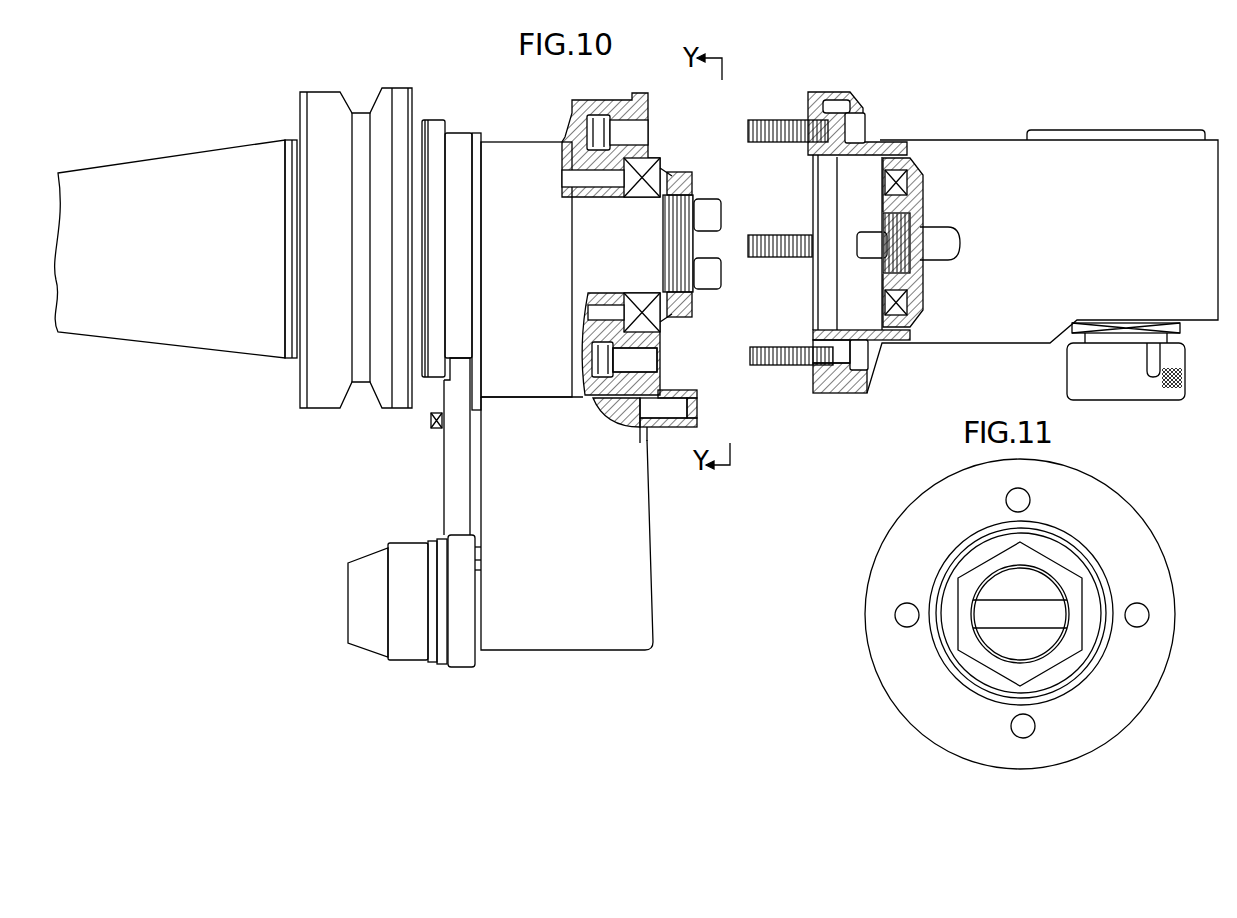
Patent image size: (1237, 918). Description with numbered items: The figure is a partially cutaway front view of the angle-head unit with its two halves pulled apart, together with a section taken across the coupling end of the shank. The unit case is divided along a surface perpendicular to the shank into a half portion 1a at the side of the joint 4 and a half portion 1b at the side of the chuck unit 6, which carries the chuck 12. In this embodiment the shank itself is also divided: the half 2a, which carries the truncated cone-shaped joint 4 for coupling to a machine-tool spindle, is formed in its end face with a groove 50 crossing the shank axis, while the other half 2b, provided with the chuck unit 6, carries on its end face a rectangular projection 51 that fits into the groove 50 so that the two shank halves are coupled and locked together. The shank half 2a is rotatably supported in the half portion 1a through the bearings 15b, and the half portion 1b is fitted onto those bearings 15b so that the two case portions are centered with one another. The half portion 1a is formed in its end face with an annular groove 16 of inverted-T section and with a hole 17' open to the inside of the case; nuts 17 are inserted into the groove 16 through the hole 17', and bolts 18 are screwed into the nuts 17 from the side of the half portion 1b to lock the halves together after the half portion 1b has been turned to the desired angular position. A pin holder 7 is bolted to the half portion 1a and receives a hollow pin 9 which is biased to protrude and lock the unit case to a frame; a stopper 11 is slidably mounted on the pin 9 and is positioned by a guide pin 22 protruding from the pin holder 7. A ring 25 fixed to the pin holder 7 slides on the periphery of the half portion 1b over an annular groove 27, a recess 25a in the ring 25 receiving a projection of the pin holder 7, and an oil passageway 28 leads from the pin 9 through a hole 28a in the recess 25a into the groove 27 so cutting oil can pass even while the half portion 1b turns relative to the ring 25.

In FIG. 10, the joint 4 is at (208, 168).
In FIG. 10, the half portion 1a is at (520, 165).
In FIG. 11, the half portion 1a is at (920, 525).
In FIG. 10, the half portion 1b is at (1050, 165).
In FIG. 10, the shank half 2a is at (687, 300).
In FIG. 11, the shank half 2a is at (1038, 587).
In FIG. 10, the shank half 2b is at (913, 215).
In FIG. 10, the chuck unit 6 is at (1198, 162).
In FIG. 10, the pin holder 7 is at (627, 562).
In FIG. 10, the hollow pin 9 is at (412, 643).
In FIG. 10, the stopper 11 is at (452, 488).
In FIG. 10, the chuck 12 is at (1137, 383).
In FIG. 10, the bearings 15b is at (655, 167).
In FIG. 10, the annular groove 16 is at (622, 135).
In FIG. 11, the annular groove 16 is at (1143, 617).
In FIG. 10, the nuts 17 is at (587, 219).
In FIG. 10, the hole 17' is at (587, 303).
In FIG. 10, the bolts 18 is at (787, 120).
In FIG. 10, the guide pin 22 is at (430, 423).
In FIG. 10, the ring 25 is at (832, 100).
In FIG. 10, the recess 25a is at (850, 393).
In FIG. 10, the annular groove 27 is at (838, 102).
In FIG. 10, the oil passageway 28 is at (645, 433).
In FIG. 10, the hole 28a is at (837, 392).
In FIG. 10, the groove 50 is at (710, 237).
In FIG. 11, the groove 50 is at (1037, 625).
In FIG. 10, the rectangular projection 51 is at (867, 240).